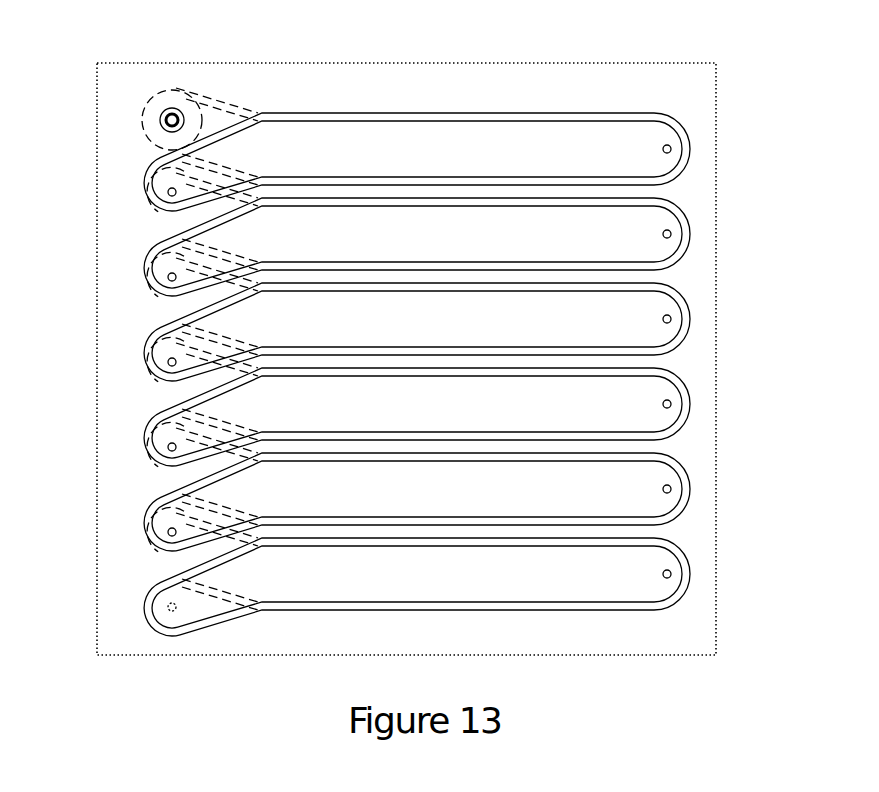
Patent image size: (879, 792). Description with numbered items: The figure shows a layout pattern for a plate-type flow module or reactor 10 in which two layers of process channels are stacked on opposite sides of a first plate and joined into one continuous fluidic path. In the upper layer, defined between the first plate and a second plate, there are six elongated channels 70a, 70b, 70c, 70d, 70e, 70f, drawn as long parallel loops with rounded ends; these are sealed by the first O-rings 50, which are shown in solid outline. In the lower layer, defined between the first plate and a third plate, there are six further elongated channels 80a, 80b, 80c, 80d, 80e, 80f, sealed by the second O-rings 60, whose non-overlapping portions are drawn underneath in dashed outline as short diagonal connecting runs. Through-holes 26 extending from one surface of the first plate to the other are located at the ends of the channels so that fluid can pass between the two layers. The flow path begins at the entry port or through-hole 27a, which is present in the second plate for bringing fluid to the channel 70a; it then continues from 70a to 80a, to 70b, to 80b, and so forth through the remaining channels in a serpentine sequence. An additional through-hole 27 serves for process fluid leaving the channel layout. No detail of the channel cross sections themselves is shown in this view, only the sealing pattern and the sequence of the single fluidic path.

The flow module or flow reactor 10 is at (618, 655).
The through-hole 26 is at (671, 148).
The additional through-hole 27 is at (160, 120).
The through-hole or port 27a is at (168, 612).
The first O-ring 50 is at (682, 167).
The second O-ring 60 is at (166, 89).
The elongated channel 70a is at (474, 586).
The elongated channel 70b is at (474, 501).
The elongated channel 70c is at (474, 416).
The elongated channel 70d is at (474, 331).
The elongated channel 70e is at (474, 246).
The elongated channel 70f is at (474, 161).
The elongated channel 80a is at (165, 582).
The elongated channel 80b is at (155, 482).
The elongated channel 80c is at (155, 397).
The elongated channel 80d is at (155, 312).
The elongated channel 80e is at (155, 227).
The elongated channel 80f is at (168, 140).